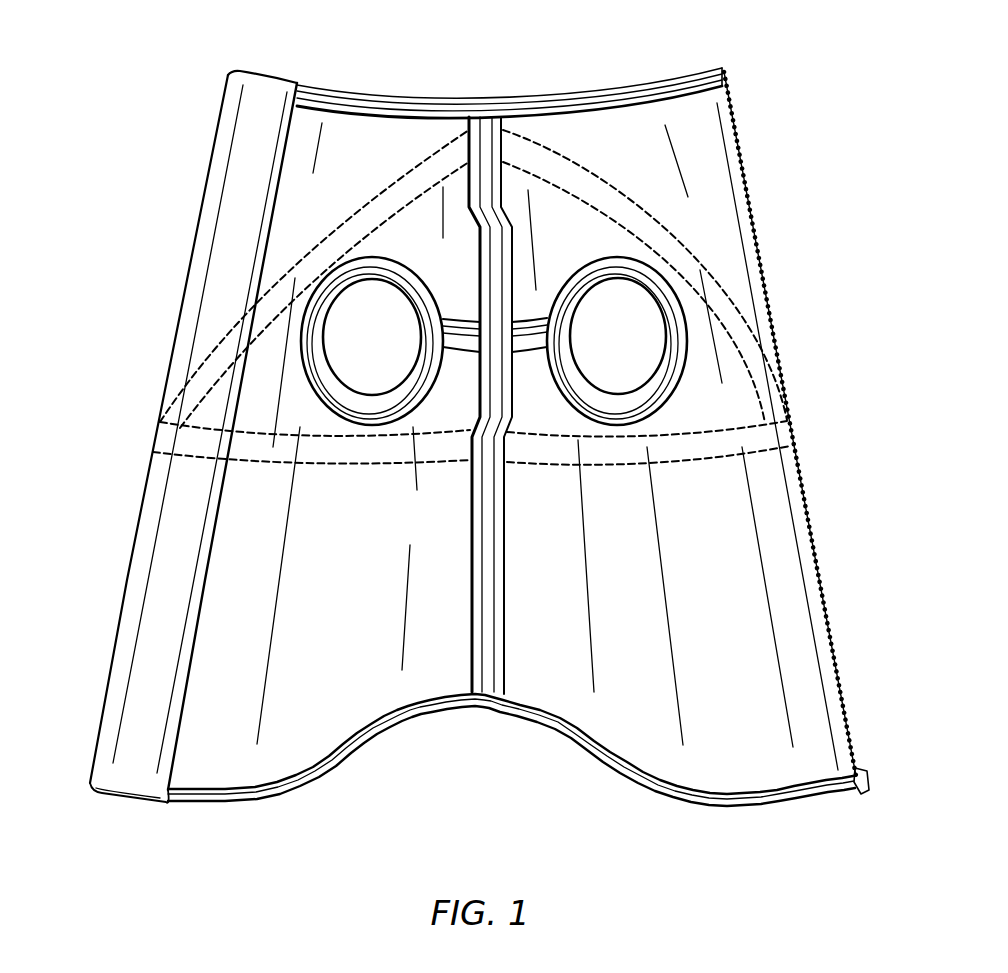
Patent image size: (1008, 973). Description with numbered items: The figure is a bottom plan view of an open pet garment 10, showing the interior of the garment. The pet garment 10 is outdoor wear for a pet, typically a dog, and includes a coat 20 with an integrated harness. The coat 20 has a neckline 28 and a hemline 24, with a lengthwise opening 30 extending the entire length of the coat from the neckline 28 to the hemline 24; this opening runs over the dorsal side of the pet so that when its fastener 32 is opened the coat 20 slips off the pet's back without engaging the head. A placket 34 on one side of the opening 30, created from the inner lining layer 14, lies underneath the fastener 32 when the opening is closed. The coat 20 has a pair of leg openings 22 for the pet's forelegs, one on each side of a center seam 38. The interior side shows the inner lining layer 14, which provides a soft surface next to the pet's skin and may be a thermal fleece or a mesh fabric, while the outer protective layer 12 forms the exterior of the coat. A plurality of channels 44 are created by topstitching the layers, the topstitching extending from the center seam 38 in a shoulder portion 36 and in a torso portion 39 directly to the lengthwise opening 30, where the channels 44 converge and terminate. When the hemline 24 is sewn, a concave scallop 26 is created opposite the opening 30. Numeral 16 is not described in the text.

The pet garment 10 is at (803, 116).
The outer protective layer 12 is at (157, 420).
The inner lining layer 14 is at (492, 435).
The yoke 16 is at (433, 153).
The coat 20 is at (750, 608).
The leg openings 22 is at (647, 350).
The hemline 24 is at (805, 790).
The concave scallop 26 is at (570, 735).
The neckline 28 is at (677, 83).
The lengthwise opening 30 is at (777, 284).
The fastener 32 is at (745, 165).
The placket 34 is at (242, 177).
The shoulder portion 36 is at (353, 140).
The center seam 38 is at (485, 688).
The torso portion 39 is at (242, 498).
The channels 44 is at (740, 333).